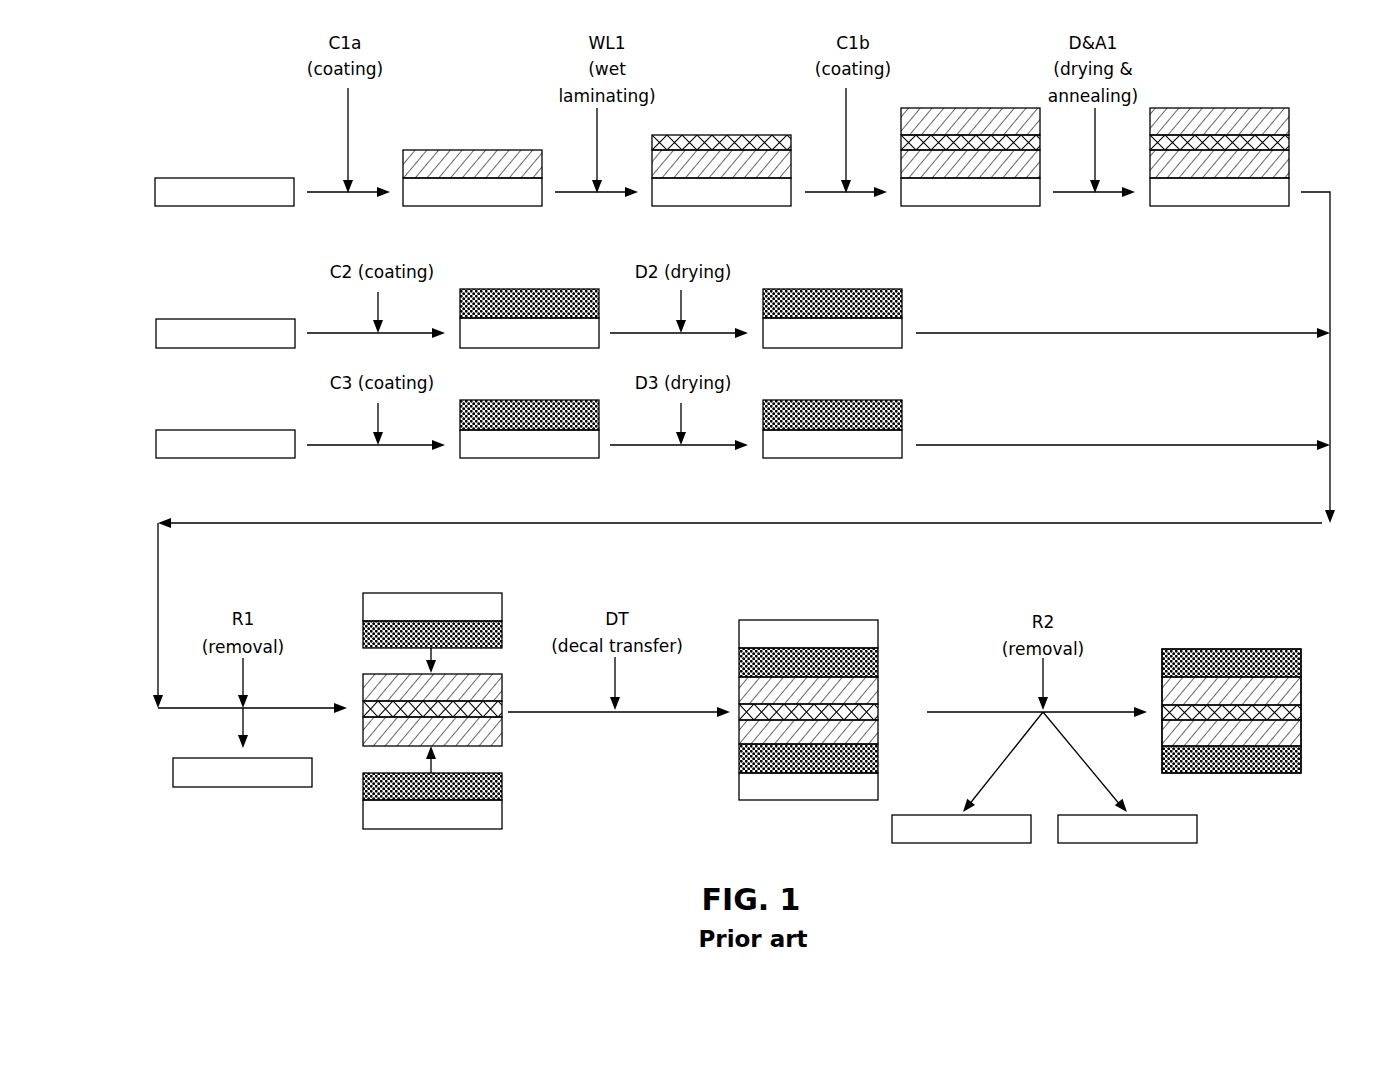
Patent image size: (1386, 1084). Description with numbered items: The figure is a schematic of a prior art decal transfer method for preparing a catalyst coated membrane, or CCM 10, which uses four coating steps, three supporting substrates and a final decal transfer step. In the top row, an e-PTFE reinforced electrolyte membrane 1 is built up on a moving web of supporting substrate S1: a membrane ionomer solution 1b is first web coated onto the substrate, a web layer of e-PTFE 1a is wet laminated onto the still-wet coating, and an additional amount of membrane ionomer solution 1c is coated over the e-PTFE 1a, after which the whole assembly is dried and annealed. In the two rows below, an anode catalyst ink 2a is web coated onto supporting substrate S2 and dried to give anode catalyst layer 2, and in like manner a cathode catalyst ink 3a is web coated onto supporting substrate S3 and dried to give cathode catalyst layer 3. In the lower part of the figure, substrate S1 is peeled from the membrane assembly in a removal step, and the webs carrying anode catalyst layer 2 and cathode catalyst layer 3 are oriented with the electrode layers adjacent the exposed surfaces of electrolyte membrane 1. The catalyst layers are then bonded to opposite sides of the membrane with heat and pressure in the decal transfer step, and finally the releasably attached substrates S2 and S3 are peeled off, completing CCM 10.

The e-PTFE reinforced electrolyte membrane 1 is at (856, 406).
The e-PTFE layer 1a is at (752, 137).
The membrane ionomer solution 1b is at (507, 152).
The membrane ionomer solution 1c is at (972, 108).
The anode catalyst layer 2 is at (867, 292).
The anode catalyst ink 2a is at (562, 293).
The cathode catalyst layer 3 is at (867, 403).
The cathode catalyst ink 3a is at (562, 404).
The CCM 10 is at (1320, 676).
The supporting substrate S1 is at (251, 186).
The supporting substrate S2 is at (253, 325).
The supporting substrate S3 is at (253, 436).